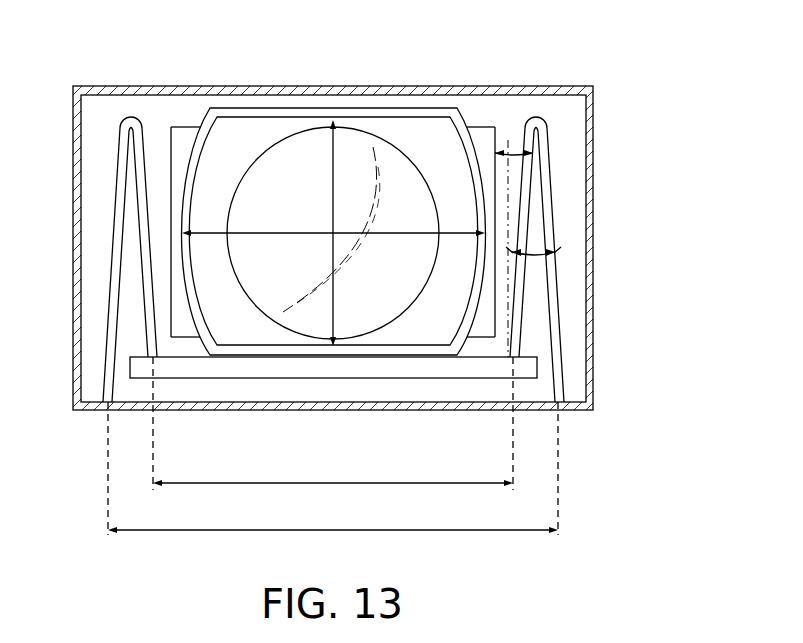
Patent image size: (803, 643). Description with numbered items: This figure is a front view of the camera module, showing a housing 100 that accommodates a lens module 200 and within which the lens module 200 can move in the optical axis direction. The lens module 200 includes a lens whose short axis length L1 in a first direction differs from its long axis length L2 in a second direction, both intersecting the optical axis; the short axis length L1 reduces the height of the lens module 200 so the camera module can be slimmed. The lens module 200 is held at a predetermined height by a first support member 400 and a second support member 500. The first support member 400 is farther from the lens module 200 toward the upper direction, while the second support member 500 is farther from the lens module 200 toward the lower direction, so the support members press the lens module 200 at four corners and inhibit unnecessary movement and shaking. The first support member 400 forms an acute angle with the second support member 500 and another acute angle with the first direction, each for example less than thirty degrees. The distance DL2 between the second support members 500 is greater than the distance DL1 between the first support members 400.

The housing 100 is at (435, 87).
The lens module 200 is at (393, 118).
The first support member 400 is at (152, 340).
The second support member 500 is at (110, 368).
The short axis length L1 is at (333, 168).
The long axis length L2 is at (283, 222).
The distance between the first support members DL1 is at (333, 423).
The distance between the second support members DL2 is at (333, 468).